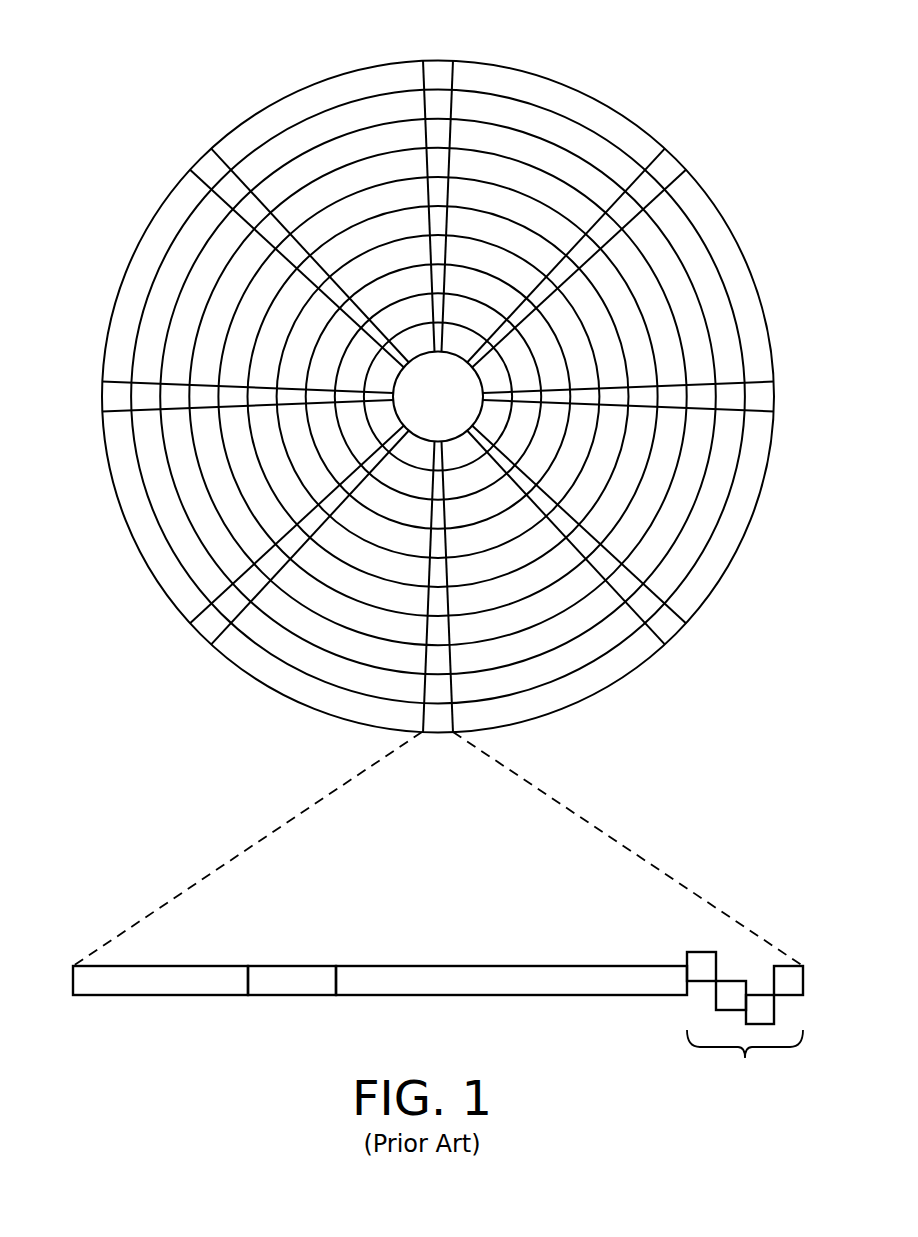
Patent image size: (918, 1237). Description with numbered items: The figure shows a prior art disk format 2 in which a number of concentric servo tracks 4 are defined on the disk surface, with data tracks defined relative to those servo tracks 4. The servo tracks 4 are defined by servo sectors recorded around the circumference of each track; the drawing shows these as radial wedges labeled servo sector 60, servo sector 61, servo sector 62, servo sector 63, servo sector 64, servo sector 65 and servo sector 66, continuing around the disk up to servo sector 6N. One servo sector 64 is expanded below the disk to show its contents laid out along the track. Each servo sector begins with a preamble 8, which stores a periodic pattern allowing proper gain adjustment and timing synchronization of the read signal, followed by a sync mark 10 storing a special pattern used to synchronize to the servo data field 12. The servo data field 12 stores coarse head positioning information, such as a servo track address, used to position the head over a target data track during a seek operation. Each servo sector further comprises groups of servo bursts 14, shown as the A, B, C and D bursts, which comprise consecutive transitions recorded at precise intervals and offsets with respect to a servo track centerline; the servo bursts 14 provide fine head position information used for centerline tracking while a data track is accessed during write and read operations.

The disk format 2 is at (185, 61).
The servo track 4 is at (553, 128).
The servo sector 60 is at (438, 70).
The servo sector 61 is at (668, 168).
The servo sector 62 is at (780, 397).
The servo sector 63 is at (668, 627).
The servo sector 64 is at (284, 806).
The servo sector 65 is at (205, 628).
The servo sector 66 is at (108, 397).
The servo sector 6N is at (208, 165).
The preamble 8 is at (140, 997).
The sync mark 10 is at (296, 997).
The servo data field 12 is at (504, 997).
The servo bursts 14 is at (670, 929).